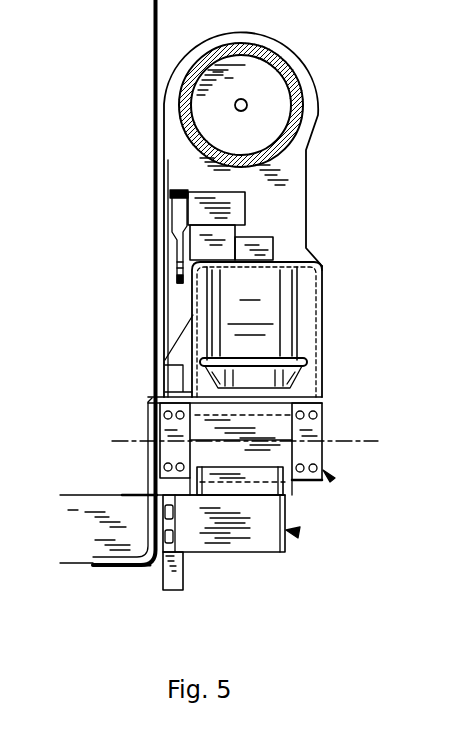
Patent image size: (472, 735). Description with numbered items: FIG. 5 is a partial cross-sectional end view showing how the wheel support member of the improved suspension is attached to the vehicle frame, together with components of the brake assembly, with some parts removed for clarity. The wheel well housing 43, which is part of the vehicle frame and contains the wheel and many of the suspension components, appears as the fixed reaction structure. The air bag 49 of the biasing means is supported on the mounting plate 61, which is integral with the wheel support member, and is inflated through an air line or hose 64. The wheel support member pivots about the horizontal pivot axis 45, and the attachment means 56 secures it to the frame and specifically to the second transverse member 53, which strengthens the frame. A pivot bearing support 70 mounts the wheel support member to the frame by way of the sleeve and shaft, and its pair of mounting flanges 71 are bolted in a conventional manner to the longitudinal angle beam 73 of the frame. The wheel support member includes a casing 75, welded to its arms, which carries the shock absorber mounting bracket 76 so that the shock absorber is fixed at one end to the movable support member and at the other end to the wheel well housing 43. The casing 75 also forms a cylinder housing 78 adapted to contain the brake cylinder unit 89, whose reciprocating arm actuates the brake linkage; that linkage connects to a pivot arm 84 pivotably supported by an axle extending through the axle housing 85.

The wheel well housing 43 is at (155, 48).
The horizontal pivot axis 45 is at (365, 438).
The air bag 49 is at (298, 63).
The second transverse member 53 is at (100, 502).
The attachment means 56 is at (287, 530).
The mounting plate 61 is at (312, 137).
The air line or hose 64 is at (247, 105).
The pivot bearing support 70 is at (323, 470).
The mounting flanges 71 is at (183, 553).
The longitudinal angle beam 73 is at (110, 570).
The casing 75 is at (323, 270).
The shock absorber mounting bracket 76 is at (268, 248).
The cylinder housing 78 is at (316, 341).
The pivot arm 84 is at (182, 253).
The axle housing 85 is at (238, 213).
The brake cylinder unit 89 is at (265, 328).